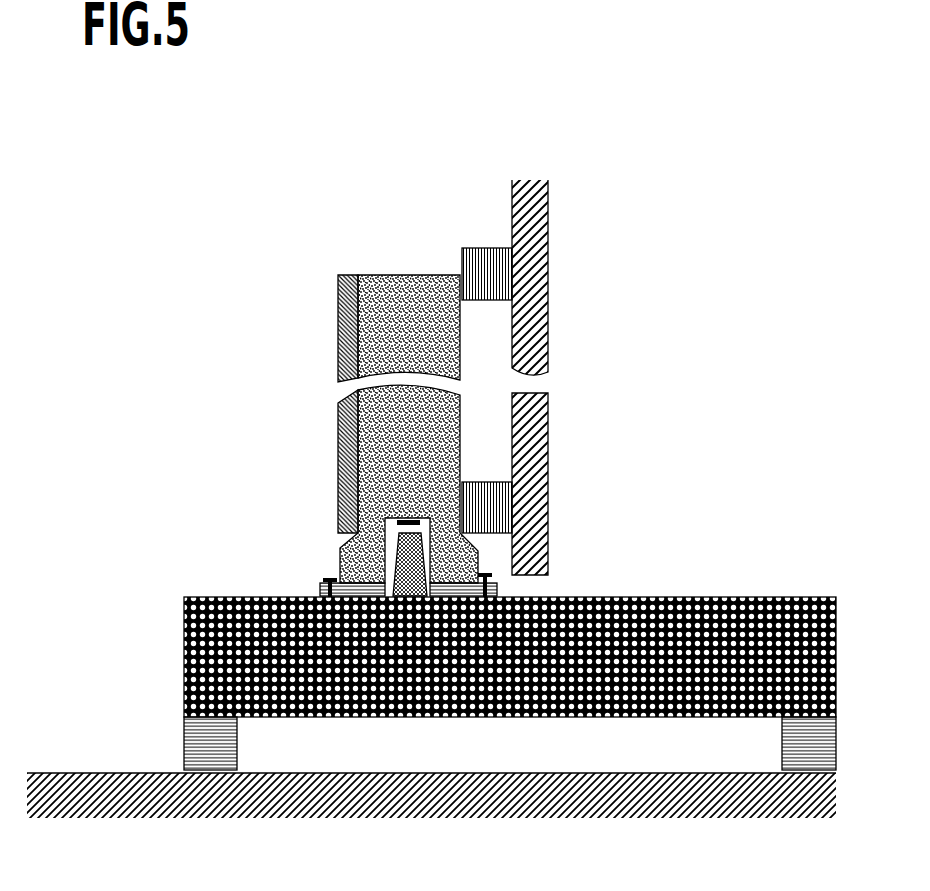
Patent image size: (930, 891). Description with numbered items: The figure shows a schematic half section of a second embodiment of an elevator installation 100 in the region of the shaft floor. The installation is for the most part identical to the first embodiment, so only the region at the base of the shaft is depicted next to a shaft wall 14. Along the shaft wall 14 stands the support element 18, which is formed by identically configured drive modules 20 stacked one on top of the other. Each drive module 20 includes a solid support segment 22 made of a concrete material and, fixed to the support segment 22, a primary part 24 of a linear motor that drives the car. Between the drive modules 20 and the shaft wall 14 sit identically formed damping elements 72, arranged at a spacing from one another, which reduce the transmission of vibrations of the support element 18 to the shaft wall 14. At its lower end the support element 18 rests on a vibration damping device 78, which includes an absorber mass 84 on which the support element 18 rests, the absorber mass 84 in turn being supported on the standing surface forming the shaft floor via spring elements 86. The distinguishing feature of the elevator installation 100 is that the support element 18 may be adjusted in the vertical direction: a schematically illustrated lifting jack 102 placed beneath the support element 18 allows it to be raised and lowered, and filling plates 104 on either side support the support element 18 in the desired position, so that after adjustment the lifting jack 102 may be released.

The elevator installation 100 is at (348, 172).
The shaft wall 14 is at (540, 333).
The damping element 72 is at (490, 248).
The drive module 20 is at (362, 266).
The support segment 22 is at (396, 290).
The primary part 24 is at (340, 320).
The support element 18 is at (330, 423).
The lifting jack 102 is at (380, 556).
The filling plate 104 is at (355, 585).
The vibration damping device 78 is at (172, 667).
The absorber mass 84 is at (185, 643).
The spring element 86 is at (185, 740).